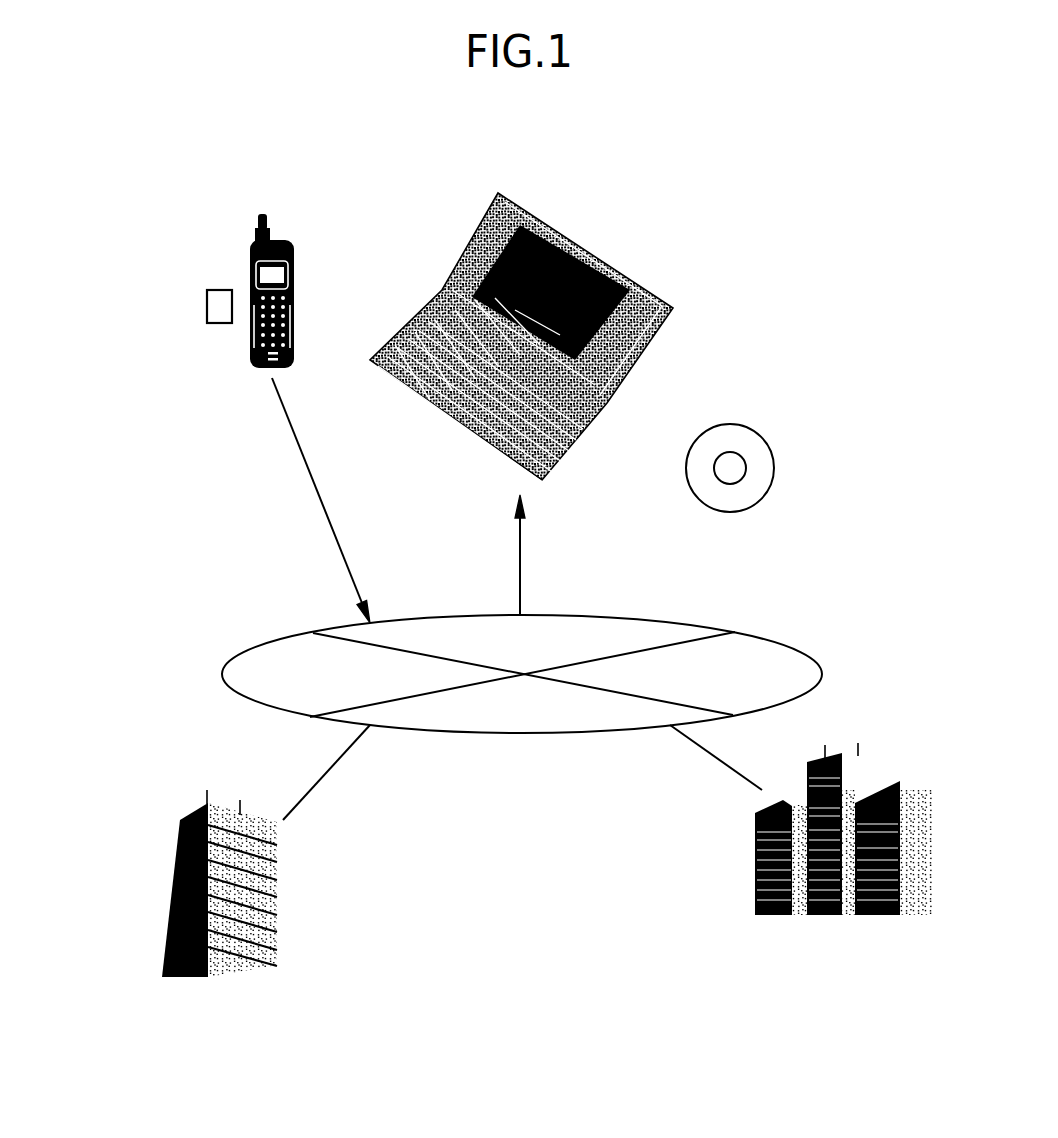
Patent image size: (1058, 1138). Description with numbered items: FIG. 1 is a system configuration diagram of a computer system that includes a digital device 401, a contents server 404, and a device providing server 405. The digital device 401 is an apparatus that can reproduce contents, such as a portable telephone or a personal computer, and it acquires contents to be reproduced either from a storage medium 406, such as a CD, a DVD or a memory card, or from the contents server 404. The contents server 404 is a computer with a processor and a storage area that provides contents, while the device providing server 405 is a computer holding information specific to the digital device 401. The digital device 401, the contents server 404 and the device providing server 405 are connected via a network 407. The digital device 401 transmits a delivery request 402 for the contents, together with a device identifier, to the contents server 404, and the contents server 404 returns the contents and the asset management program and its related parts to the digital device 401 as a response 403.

The digital device 401 is at (317, 199).
The delivery request 402 is at (313, 488).
The response 403 is at (523, 554).
The contents server 404 is at (826, 925).
The device providing server 405 is at (220, 988).
The storage medium 406 is at (206, 304).
The network 407 is at (221, 675).